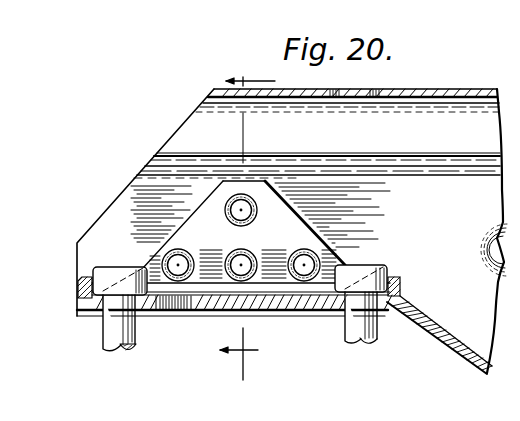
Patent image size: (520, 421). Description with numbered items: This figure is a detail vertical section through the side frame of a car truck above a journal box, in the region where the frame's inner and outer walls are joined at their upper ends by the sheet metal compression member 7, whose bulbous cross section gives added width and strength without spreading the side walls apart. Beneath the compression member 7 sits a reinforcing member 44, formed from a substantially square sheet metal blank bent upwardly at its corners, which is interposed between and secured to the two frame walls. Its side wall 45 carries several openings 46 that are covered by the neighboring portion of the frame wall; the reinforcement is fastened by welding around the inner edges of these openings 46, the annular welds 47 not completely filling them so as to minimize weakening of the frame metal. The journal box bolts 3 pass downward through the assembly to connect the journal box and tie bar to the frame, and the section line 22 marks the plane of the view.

The sheet metal compression member 7 is at (194, 111).
The section line / sectioned member 22 is at (412, 283).
The journal box bolt 3 is at (362, 350).
The reinforcing member 44 is at (292, 299).
The side wall of reinforcing member 45 is at (186, 209).
The opening 46 is at (230, 222).
The weld 47 is at (297, 253).